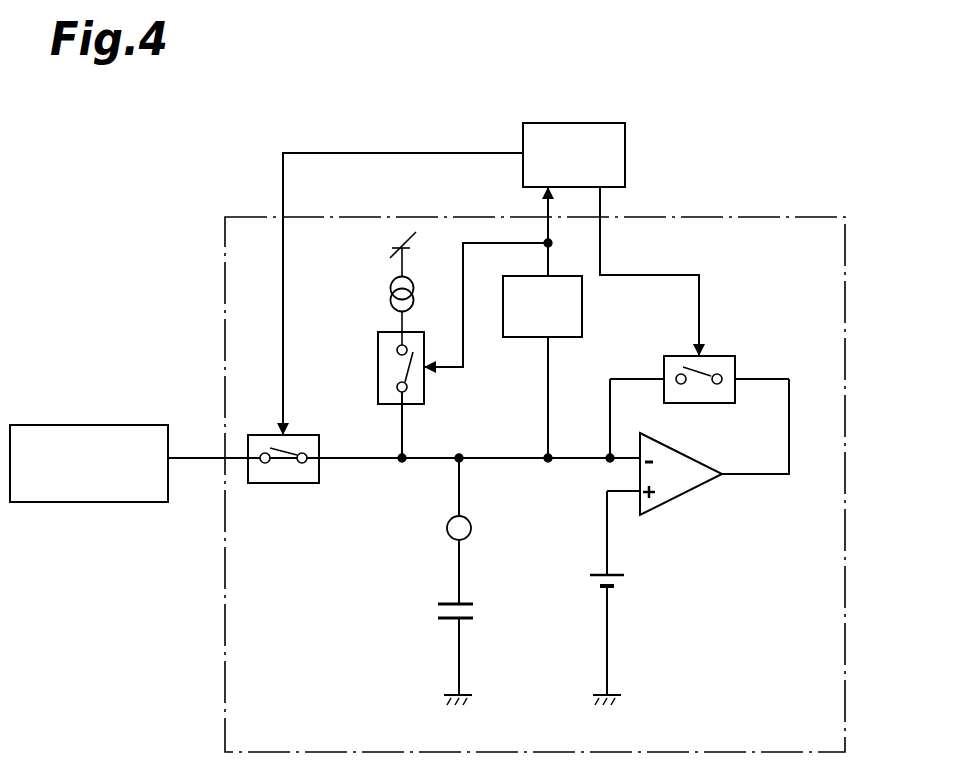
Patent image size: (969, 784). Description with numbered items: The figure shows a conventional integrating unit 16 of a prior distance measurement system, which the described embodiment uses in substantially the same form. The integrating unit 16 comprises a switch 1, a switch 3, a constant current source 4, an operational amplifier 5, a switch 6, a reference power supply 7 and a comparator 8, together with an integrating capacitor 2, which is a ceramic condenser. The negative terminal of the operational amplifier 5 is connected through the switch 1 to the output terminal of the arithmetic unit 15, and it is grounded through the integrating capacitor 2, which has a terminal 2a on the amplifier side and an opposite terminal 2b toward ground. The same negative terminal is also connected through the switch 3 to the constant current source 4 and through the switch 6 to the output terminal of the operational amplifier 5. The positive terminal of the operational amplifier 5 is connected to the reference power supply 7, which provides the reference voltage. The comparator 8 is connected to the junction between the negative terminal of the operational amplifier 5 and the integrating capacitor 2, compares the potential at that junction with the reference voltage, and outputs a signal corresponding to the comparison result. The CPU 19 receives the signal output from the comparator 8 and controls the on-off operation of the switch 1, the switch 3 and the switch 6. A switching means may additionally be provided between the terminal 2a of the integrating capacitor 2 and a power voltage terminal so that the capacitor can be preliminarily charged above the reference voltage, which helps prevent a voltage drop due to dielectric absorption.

The switch 1 is at (301, 484).
The integrating capacitor 2 is at (454, 581).
The terminal of the integrating capacitor 2a is at (459, 603).
The electrode 2b is at (456, 618).
The switch 3 is at (378, 385).
The constant current source 4 is at (391, 283).
The operational amplifier 5 is at (695, 492).
The switch 6 is at (719, 355).
The reference power supply 7 is at (627, 583).
The comparator 8 is at (528, 338).
The arithmetic unit 15 is at (113, 425).
The integrating unit 16 is at (779, 216).
The CPU 19 is at (625, 167).